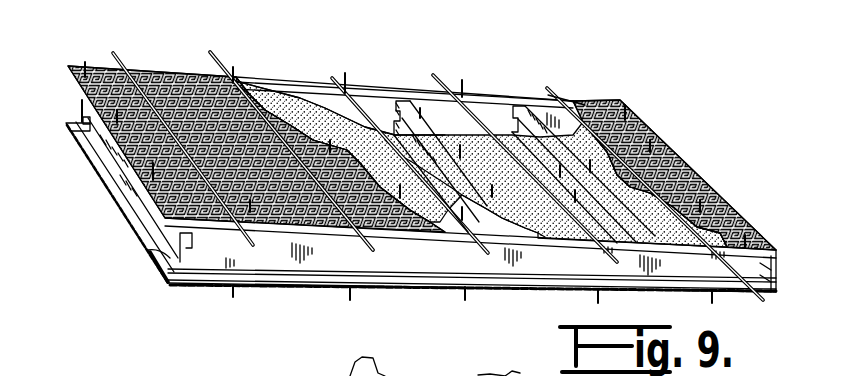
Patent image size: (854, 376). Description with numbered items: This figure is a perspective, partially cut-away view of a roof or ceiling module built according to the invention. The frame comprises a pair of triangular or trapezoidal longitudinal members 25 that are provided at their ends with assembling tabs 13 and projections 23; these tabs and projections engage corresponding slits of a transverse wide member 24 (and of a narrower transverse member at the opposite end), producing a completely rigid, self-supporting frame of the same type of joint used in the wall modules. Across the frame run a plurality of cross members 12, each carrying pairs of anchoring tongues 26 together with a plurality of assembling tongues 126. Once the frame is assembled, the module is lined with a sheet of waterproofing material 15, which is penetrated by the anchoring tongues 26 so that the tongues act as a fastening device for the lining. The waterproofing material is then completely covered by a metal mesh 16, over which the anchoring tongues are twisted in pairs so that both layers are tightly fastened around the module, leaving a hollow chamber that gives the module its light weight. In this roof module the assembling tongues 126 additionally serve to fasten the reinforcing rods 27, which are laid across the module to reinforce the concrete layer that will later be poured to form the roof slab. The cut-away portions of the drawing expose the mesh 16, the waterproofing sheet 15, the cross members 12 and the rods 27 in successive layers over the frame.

The cross members 12 is at (434, 128).
The assembling tabs 13 is at (181, 246).
The sheet of waterproofing material 15 is at (287, 107).
The metal mesh 16 is at (172, 82).
The projections 23 is at (146, 252).
The transverse wide member 24 is at (127, 177).
The longitudinal members 25 is at (290, 252).
The anchoring tongues 26 is at (466, 142).
The reinforcing rods 27 is at (228, 75).
The assembling tongues 126 is at (465, 292).